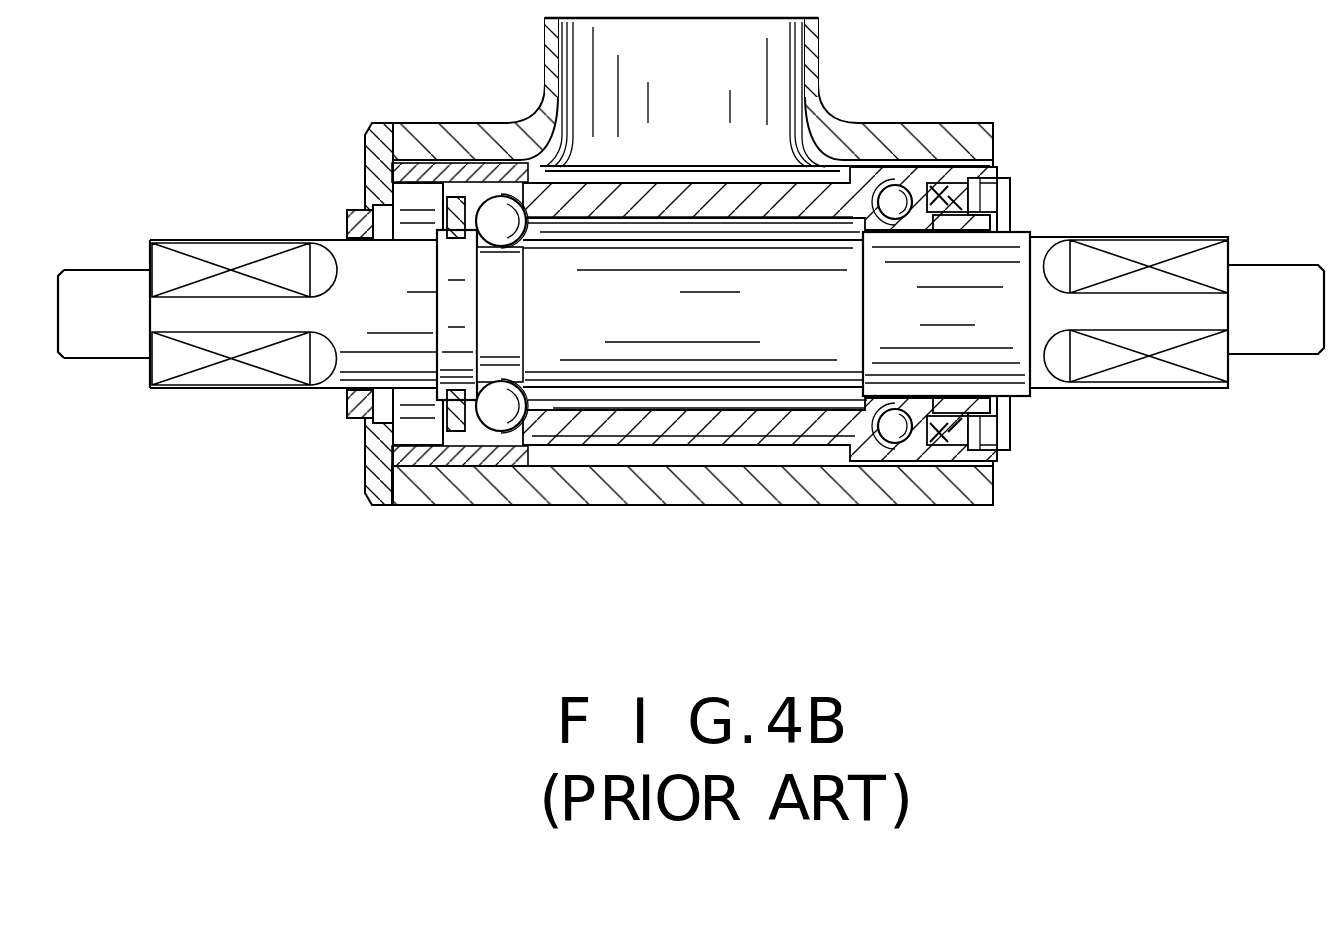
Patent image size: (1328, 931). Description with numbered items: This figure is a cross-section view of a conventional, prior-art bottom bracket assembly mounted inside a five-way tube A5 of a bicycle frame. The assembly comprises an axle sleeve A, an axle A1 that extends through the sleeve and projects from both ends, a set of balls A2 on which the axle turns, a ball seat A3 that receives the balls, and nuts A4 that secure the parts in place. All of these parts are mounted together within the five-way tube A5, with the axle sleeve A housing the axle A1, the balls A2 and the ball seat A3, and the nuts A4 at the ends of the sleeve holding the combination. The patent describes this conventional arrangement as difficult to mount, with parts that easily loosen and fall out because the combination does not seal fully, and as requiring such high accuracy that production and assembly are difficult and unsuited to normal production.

The axle sleeve A is at (773, 437).
The axle A1 is at (603, 372).
The balls A2 is at (497, 212).
The ball seat A3 is at (935, 200).
The nuts A4 is at (348, 213).
The five-way tube A5 is at (978, 123).